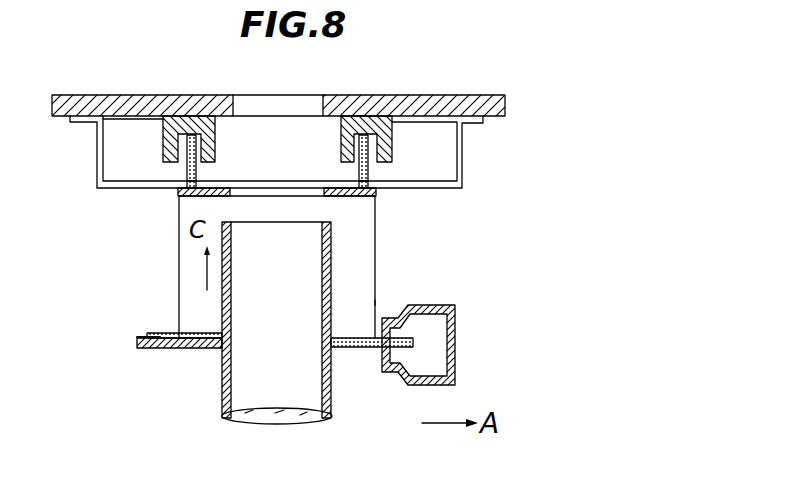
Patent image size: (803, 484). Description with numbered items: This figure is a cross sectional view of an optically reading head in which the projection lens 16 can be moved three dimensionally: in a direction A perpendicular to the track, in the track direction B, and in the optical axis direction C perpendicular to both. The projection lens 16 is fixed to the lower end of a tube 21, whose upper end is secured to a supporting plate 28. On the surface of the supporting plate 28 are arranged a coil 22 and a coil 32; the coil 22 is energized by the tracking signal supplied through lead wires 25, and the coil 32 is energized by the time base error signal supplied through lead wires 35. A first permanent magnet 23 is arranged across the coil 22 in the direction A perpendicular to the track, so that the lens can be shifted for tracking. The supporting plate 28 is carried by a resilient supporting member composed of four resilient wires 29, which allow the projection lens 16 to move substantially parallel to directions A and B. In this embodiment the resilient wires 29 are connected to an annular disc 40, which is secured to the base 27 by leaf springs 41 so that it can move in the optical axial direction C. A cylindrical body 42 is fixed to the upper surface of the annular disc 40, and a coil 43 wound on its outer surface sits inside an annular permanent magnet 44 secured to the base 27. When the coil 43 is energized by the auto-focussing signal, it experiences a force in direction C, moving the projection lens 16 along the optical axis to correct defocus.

The projection lens 16 is at (263, 418).
The tube 21 is at (332, 410).
The coil 22 is at (153, 350).
The first permanent magnet 23 is at (457, 354).
The lead wires 25 is at (141, 338).
The base 27 is at (413, 96).
The supporting plate 28 is at (363, 352).
The resilient wires 29 is at (193, 179).
The coil 32 is at (192, 350).
The lead wires 35 is at (170, 338).
The annular disc 40 is at (378, 200).
The leaf springs 41 is at (113, 180).
The cylindrical body 42 is at (198, 177).
The coil 43 is at (382, 189).
The annular permanent magnet 44 is at (393, 148).